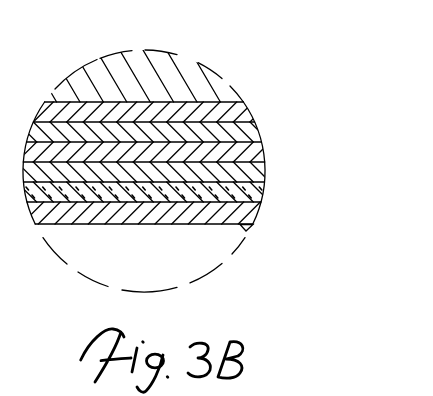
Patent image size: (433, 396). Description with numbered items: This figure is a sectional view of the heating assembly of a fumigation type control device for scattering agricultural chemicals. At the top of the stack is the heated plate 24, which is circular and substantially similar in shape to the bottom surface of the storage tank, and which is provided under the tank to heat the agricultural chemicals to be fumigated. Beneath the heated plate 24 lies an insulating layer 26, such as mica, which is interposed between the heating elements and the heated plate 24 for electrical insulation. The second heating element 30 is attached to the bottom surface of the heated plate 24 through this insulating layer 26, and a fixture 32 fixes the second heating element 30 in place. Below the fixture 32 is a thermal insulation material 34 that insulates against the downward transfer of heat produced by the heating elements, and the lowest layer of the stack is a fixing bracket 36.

The heated plate 24 is at (191, 63).
The insulating layer 26 is at (243, 115).
The second heating element 30 is at (258, 133).
The fixture 32 is at (259, 172).
The thermal insulation material 34 is at (258, 192).
The fixing bracket 36 is at (239, 228).